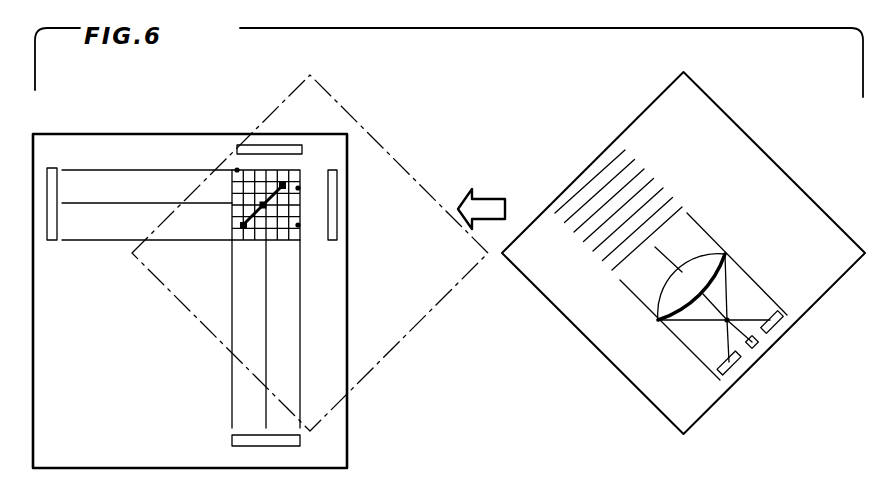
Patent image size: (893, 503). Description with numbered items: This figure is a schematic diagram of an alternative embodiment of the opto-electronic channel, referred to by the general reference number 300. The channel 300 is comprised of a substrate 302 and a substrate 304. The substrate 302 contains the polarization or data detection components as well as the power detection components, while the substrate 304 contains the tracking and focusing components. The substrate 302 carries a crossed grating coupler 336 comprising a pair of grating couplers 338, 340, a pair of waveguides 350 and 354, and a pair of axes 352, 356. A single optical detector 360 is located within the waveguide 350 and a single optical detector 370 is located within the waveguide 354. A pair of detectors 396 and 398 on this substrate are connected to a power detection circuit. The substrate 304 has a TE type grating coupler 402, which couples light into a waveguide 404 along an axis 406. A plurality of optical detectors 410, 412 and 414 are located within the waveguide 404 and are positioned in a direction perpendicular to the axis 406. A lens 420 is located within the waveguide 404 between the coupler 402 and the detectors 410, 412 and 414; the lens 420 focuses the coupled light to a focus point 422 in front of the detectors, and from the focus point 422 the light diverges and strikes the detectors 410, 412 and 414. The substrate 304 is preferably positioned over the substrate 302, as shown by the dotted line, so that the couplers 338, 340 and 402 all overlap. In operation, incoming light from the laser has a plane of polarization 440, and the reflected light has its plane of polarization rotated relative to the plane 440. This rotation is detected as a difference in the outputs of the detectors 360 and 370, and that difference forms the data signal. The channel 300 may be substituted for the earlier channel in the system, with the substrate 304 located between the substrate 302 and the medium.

The optical channel 300 is at (470, 433).
The substrate 302 is at (162, 117).
The substrate 304 is at (623, 133).
The crossed grating coupler 336 is at (298, 225).
The grating coupler 338 is at (298, 188).
The grating coupler 340 is at (237, 170).
The waveguide 350 is at (80, 170).
The axis 352 is at (83, 185).
The waveguide 354 is at (232, 365).
The axis 356 is at (267, 393).
The optical detector 360 is at (47, 167).
The optical detector 370 is at (238, 446).
The detector 396 is at (338, 210).
The detector 398 is at (280, 145).
The TE type grating coupler 402 is at (600, 187).
The waveguide 404 is at (687, 217).
The axis 406 is at (700, 257).
The optical detector 410 is at (733, 375).
The optical detector 412 is at (760, 349).
The optical detector 414 is at (782, 328).
The lens 420 is at (658, 320).
The focus point 422 is at (727, 320).
The plane of polarization 440 is at (250, 171).